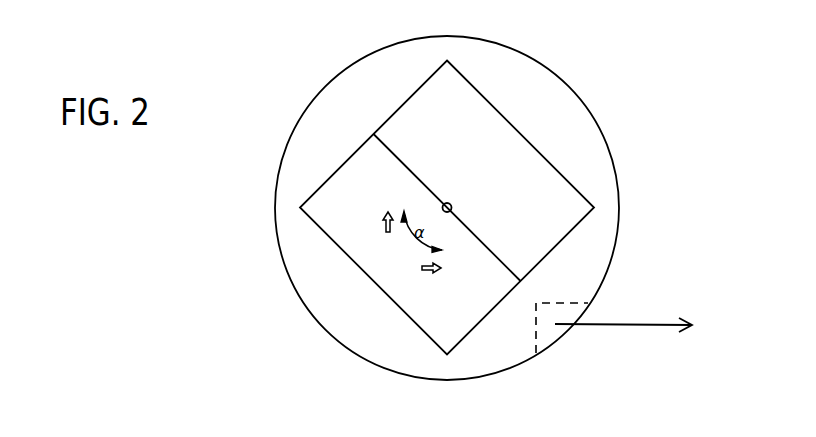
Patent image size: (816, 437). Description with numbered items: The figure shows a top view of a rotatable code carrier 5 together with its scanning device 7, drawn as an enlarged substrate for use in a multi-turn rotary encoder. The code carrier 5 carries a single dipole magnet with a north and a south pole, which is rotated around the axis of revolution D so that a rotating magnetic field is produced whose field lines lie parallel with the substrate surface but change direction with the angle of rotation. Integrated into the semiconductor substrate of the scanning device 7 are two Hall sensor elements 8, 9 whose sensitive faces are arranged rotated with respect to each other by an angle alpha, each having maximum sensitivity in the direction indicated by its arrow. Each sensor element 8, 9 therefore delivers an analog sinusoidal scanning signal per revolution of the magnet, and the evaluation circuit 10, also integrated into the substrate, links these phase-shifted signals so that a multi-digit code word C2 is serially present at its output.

The code carrier 5 is at (472, 108).
The scanning device 7 is at (583, 124).
The sensor element 8 is at (398, 207).
The sensor element 9 is at (447, 276).
The evaluation circuit 10 is at (547, 330).
The axis of revolution D is at (452, 206).
The code word C2 is at (639, 324).